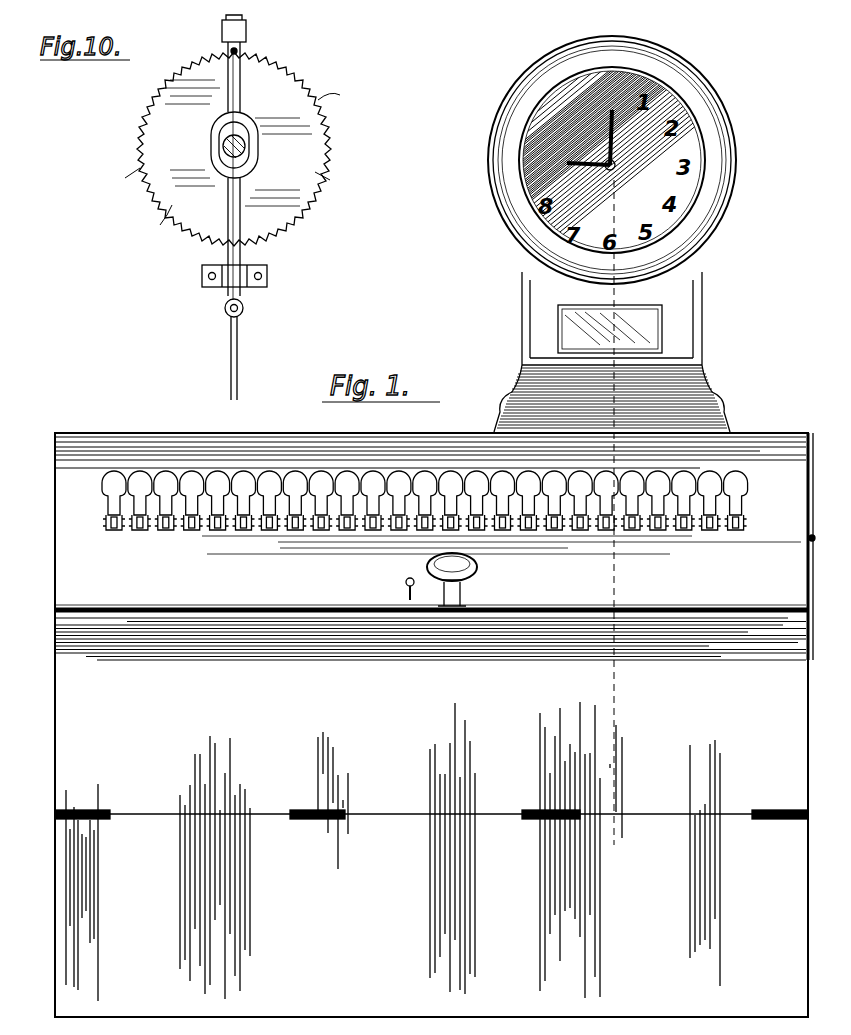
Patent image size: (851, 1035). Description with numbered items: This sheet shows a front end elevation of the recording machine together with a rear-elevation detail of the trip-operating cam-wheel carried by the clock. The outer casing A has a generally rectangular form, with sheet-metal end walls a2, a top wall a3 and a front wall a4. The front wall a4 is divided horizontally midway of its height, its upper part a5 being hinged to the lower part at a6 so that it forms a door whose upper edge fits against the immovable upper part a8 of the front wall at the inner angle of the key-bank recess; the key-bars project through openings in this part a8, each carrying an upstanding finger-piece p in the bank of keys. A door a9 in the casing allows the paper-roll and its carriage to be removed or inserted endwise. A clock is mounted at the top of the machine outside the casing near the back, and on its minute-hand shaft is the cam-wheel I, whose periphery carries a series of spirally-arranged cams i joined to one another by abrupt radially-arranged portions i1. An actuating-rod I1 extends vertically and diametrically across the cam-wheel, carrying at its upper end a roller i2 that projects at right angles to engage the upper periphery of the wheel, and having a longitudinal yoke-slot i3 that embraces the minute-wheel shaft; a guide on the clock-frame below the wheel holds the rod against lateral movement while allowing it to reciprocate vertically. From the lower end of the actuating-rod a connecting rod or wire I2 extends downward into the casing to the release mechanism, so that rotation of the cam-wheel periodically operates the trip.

In FIG. 10, the cam-wheel I is at (182, 148).
In FIG. 10, the actuating-rod I1 is at (242, 258).
In FIG. 10, the connecting rod or wire I2 is at (238, 348).
In FIG. 1, the connecting rod or wire I2 is at (614, 680).
In FIG. 10, the cams i is at (228, 181).
In FIG. 10, the abrupt radially-arranged portions i1 is at (150, 236).
In FIG. 10, the roller i2 is at (238, 52).
In FIG. 10, the yoke-slot i3 is at (238, 165).
In FIG. 1, the outer casing A is at (66, 594).
In FIG. 1, the end walls a2 is at (56, 664).
In FIG. 1, the top wall a3 is at (285, 432).
In FIG. 1, the front wall a4 is at (431, 928).
In FIG. 1, the upper part of front wall a5 is at (393, 851).
In FIG. 1, the hinge a6 is at (100, 810).
In FIG. 1, the immovable upper part of front wall a8 is at (493, 571).
In FIG. 1, the door a9 is at (808, 484).
In FIG. 1, the finger-piece p is at (160, 470).